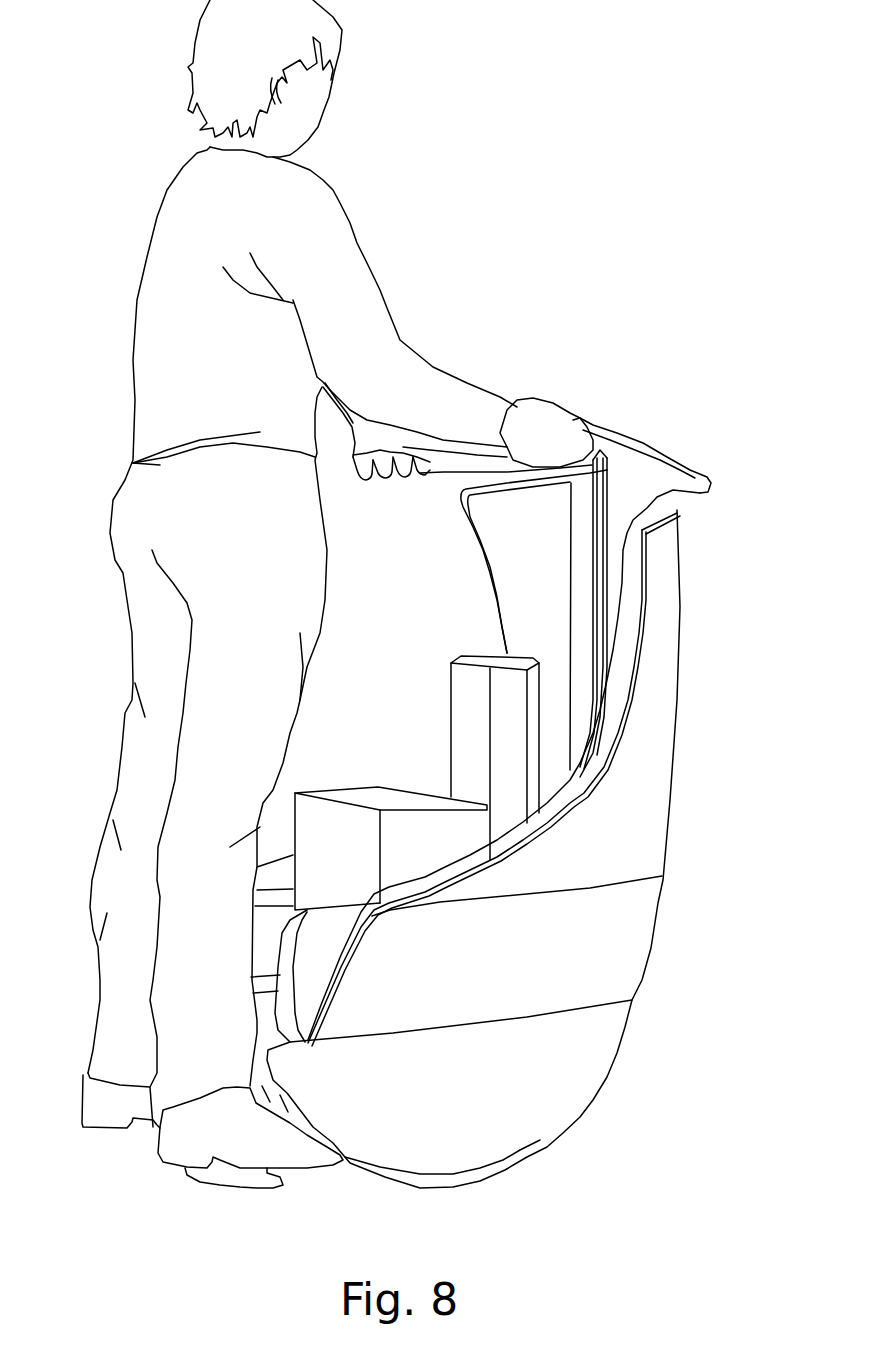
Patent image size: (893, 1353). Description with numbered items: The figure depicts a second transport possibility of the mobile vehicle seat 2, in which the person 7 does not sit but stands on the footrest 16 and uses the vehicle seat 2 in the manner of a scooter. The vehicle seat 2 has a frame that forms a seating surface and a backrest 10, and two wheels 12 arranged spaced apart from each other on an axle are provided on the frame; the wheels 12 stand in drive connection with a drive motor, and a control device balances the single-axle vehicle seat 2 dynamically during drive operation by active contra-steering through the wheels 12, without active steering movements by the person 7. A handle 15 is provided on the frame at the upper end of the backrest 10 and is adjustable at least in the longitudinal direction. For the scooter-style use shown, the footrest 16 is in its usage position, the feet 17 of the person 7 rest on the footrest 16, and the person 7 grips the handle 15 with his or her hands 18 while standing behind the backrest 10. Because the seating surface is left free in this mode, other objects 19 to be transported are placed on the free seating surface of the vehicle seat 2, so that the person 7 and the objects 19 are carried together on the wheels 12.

The vehicle seat 2 is at (660, 908).
The person 7 is at (173, 363).
The backrest 10 is at (580, 587).
The wheels 12 is at (473, 1173).
The handle 15 is at (618, 440).
The footrest 16 is at (250, 1180).
The feet 17 is at (210, 1133).
The hands 18 is at (543, 423).
The objects 19 is at (513, 722).